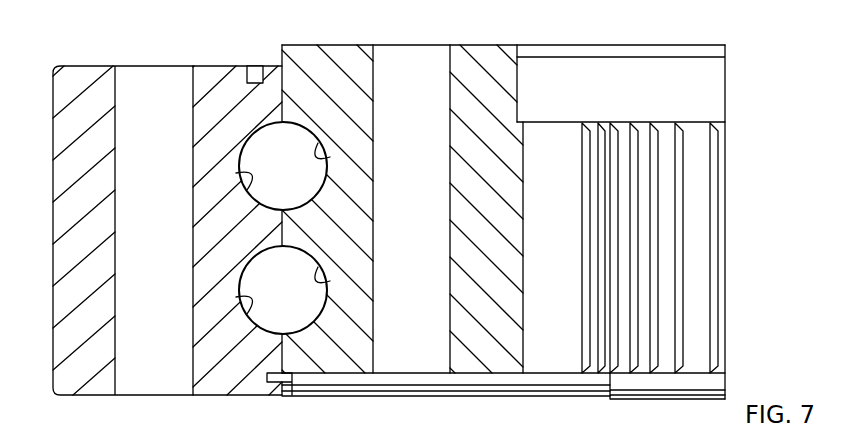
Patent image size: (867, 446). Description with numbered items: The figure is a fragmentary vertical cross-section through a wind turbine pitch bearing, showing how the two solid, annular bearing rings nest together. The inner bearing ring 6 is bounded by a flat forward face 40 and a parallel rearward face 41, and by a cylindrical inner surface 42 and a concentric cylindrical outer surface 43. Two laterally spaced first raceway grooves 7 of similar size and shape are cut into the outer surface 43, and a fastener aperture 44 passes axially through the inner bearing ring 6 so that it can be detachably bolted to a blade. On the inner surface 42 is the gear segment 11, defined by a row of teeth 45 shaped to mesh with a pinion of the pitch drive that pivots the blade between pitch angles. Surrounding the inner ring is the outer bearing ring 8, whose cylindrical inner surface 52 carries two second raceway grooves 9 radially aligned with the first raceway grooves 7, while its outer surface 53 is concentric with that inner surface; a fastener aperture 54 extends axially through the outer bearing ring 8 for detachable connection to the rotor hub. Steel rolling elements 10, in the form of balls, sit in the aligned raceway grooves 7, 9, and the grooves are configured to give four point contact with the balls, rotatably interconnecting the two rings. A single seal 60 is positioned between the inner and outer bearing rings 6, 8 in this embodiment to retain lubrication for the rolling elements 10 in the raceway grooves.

The inner bearing ring 6 is at (648, 45).
The first raceway grooves 7 is at (330, 157).
The outer bearing ring 8 is at (68, 66).
The second raceway grooves 9 is at (236, 173).
The rolling elements 10 is at (283, 228).
The gear segment 11 is at (722, 130).
The forward face 40 is at (487, 45).
The rearward face 41 is at (495, 375).
The inner surface 42 is at (523, 352).
The outer surface 43 is at (282, 45).
The fastener apertures 44 is at (452, 57).
The teeth 45 is at (700, 294).
The inner surface 52 is at (298, 383).
The outer surface 53 is at (53, 258).
The fastener apertures 54 is at (192, 80).
The seal 60 is at (672, 399).